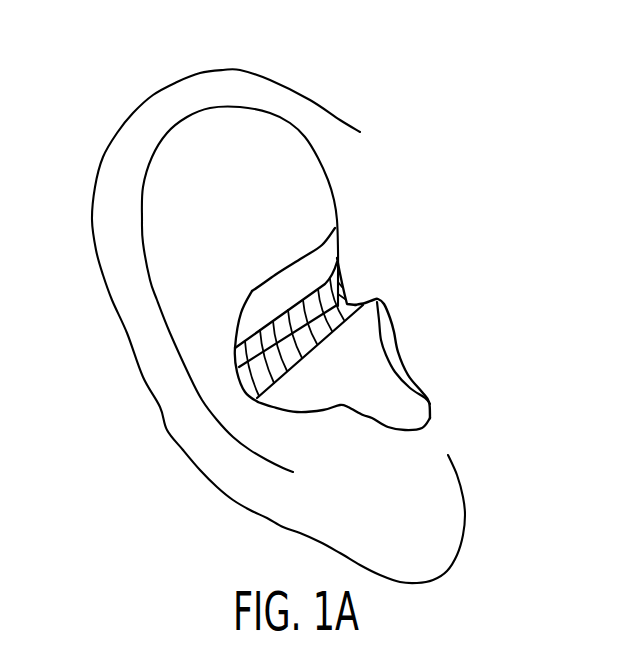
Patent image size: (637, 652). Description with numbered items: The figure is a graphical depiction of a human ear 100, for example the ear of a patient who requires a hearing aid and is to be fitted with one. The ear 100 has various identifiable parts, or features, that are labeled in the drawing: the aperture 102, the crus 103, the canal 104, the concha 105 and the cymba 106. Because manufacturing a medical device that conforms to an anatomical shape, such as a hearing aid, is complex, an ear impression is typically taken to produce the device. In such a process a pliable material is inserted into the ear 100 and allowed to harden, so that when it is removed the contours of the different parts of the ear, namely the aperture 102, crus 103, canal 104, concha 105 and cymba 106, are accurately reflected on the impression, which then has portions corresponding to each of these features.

The ear 100 is at (113, 68).
The aperture 102 is at (398, 336).
The crus 103 is at (344, 300).
The canal 104 is at (383, 319).
The concha 105 is at (327, 387).
The cymba 106 is at (290, 288).